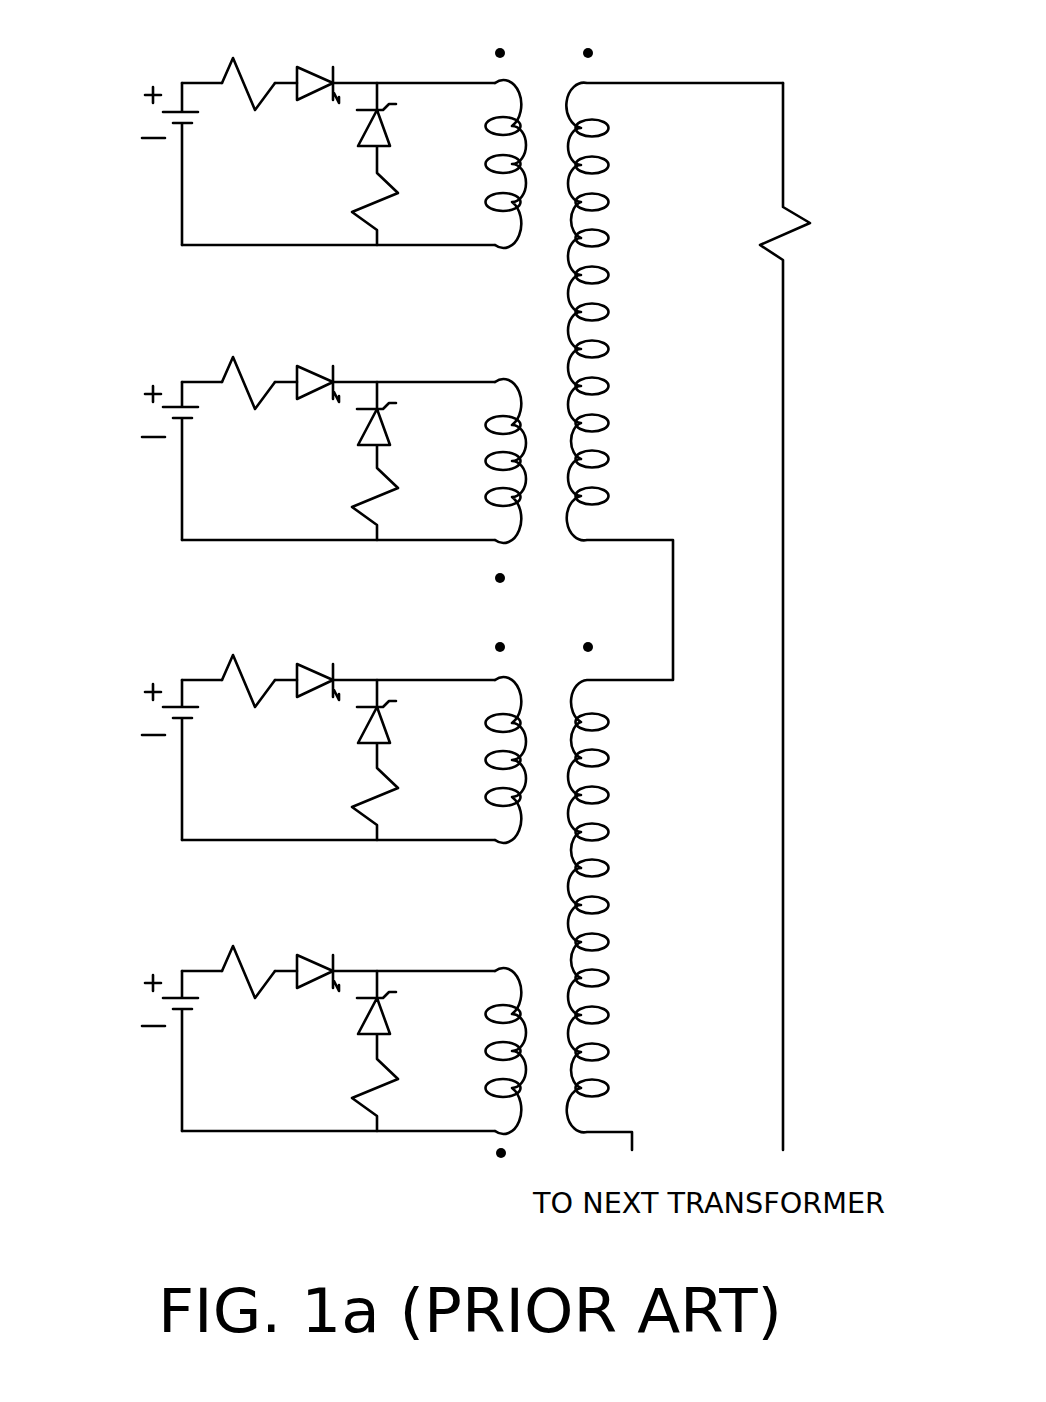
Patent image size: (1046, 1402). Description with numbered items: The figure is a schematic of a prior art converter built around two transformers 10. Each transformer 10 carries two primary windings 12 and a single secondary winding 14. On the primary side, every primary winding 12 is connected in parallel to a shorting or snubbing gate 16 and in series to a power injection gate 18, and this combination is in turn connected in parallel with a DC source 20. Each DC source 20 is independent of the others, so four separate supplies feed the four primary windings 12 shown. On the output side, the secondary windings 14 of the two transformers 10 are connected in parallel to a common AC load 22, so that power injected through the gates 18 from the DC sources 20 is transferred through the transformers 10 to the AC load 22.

The transformer 10 is at (664, 580).
The primary winding 12 is at (499, 119).
The secondary winding 14 is at (605, 308).
The shorting or snubbing gate 16 is at (358, 135).
The power injection gate 18 is at (308, 68).
The DC source 20 is at (145, 167).
The AC load 22 is at (805, 258).